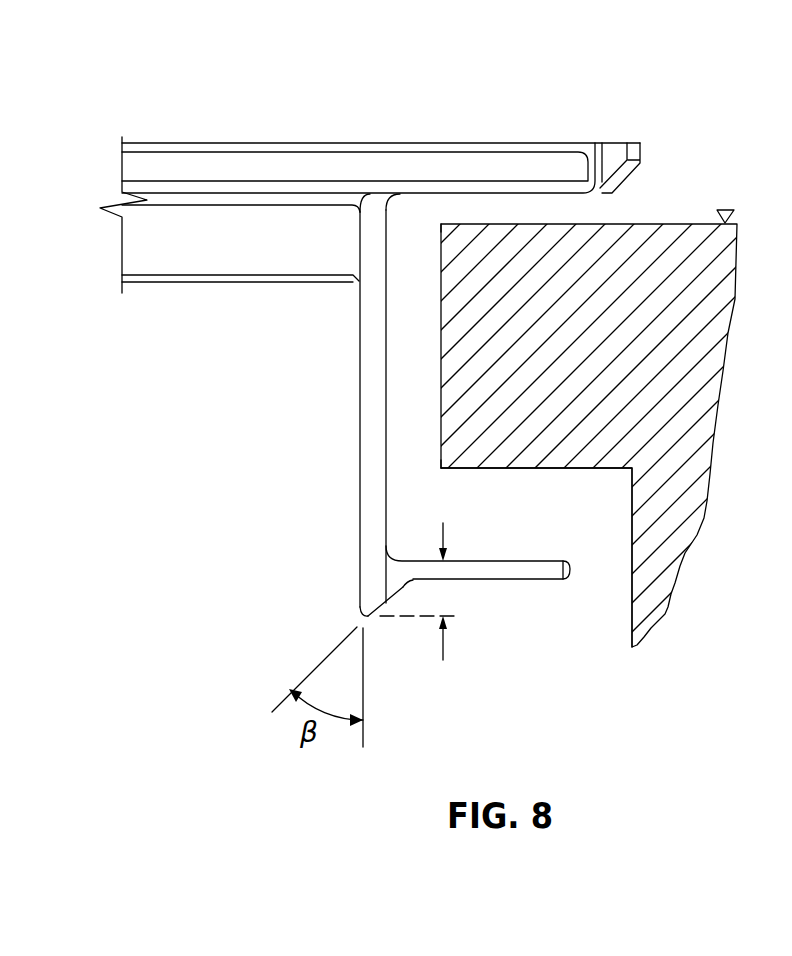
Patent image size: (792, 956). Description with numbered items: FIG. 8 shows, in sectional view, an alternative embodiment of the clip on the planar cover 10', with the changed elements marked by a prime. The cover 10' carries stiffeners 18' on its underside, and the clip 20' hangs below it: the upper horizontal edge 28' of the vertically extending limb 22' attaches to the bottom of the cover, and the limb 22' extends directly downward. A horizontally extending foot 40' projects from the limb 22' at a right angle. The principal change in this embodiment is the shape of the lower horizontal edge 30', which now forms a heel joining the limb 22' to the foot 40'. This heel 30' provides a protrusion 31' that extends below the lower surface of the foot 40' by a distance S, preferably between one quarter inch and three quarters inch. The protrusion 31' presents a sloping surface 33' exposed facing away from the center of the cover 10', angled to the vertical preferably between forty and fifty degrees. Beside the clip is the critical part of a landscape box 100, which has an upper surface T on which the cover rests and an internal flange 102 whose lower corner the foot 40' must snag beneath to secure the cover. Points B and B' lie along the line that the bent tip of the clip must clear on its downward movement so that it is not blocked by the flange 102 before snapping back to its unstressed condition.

The planar cover 10' is at (370, 169).
The stiffeners 18' is at (358, 173).
The upper horizontal edge 28' is at (387, 141).
The clip 20' is at (266, 406).
The vertically extending limb 22' is at (321, 409).
The lower horizontal edge 30' is at (329, 591).
The protrusion 31' is at (340, 617).
The sloping surface 33' is at (406, 638).
The foot 40' is at (478, 597).
The landscape box 100 is at (664, 240).
The internal flange 102 is at (566, 425).
The upper surface of the box T is at (738, 210).
The point B is at (457, 245).
The point B' is at (459, 448).
The distance S is at (418, 591).